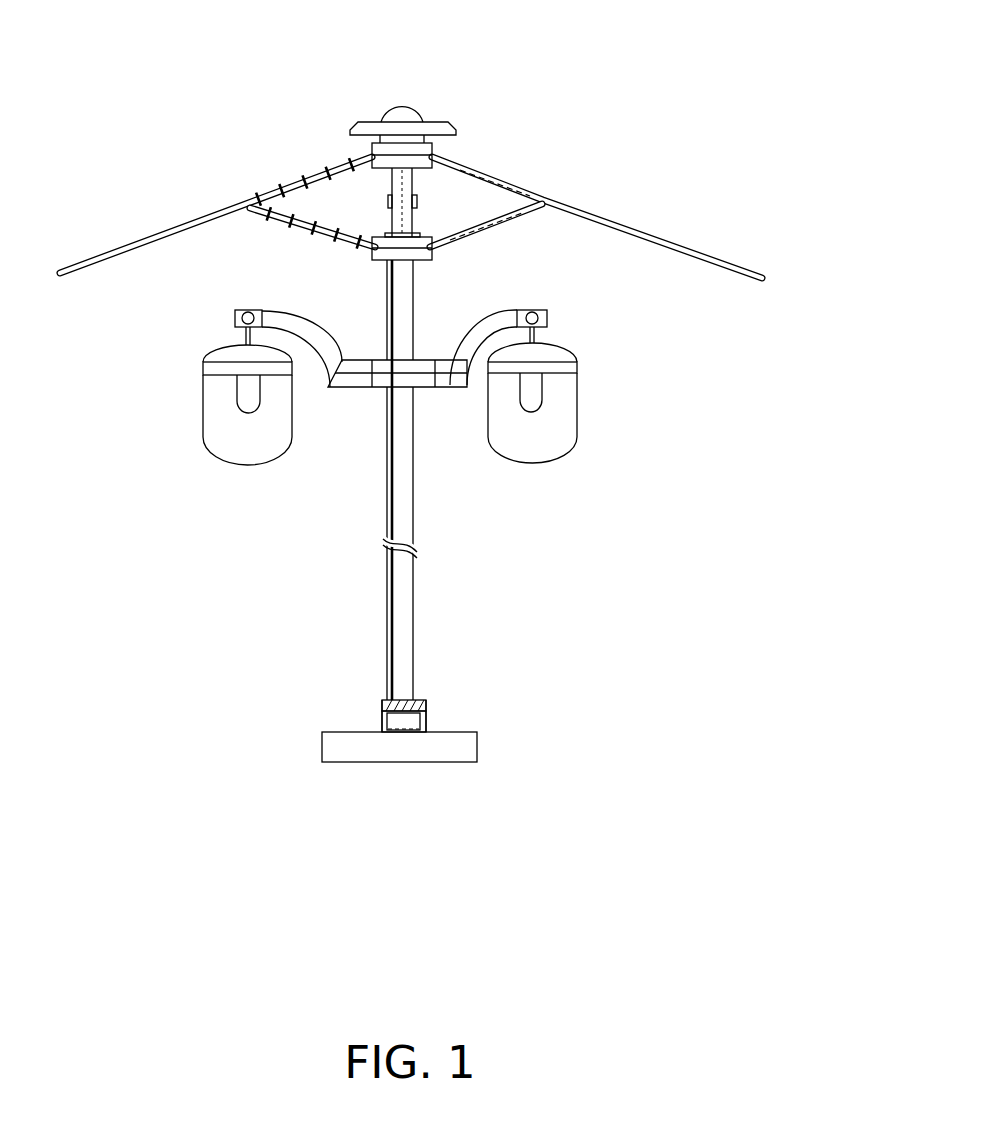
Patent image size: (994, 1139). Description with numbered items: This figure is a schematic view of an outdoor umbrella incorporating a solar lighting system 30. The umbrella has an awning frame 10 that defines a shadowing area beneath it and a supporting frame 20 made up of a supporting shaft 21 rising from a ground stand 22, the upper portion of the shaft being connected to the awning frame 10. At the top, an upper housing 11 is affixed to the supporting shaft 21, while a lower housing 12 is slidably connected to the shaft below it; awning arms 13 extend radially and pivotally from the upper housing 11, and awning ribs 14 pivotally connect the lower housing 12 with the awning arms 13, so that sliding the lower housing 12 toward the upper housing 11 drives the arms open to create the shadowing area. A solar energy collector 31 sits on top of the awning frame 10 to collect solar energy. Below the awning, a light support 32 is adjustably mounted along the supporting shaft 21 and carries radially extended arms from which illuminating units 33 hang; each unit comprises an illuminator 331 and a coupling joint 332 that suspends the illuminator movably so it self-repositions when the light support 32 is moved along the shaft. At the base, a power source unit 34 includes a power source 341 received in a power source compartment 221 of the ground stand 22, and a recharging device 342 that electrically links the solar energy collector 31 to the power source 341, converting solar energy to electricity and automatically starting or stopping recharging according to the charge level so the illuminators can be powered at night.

The awning frame 10 is at (612, 98).
The upper housing 11 is at (432, 150).
The lower housing 12 is at (420, 262).
The awning arms 13 is at (688, 250).
The awning ribs 14 is at (543, 200).
The supporting frame 20 is at (592, 606).
The supporting shaft 21 is at (405, 500).
The ground stand 22 is at (468, 753).
The power source compartment 221 is at (432, 717).
The solar lighting system 30 is at (116, 508).
The solar energy collector 31 is at (348, 114).
The light support 32 is at (352, 388).
The illuminating units 33 is at (697, 382).
The illuminator 331 is at (205, 390).
The coupling joint 332 is at (548, 332).
The power source unit 34 is at (260, 683).
The power source 341 is at (380, 731).
The recharging device 342 is at (383, 700).